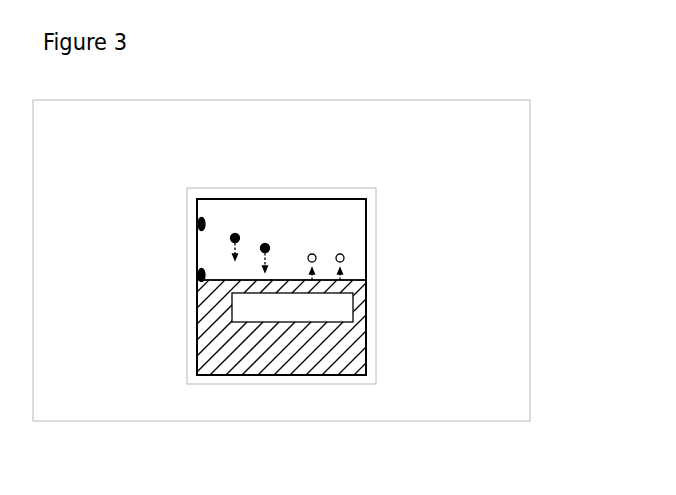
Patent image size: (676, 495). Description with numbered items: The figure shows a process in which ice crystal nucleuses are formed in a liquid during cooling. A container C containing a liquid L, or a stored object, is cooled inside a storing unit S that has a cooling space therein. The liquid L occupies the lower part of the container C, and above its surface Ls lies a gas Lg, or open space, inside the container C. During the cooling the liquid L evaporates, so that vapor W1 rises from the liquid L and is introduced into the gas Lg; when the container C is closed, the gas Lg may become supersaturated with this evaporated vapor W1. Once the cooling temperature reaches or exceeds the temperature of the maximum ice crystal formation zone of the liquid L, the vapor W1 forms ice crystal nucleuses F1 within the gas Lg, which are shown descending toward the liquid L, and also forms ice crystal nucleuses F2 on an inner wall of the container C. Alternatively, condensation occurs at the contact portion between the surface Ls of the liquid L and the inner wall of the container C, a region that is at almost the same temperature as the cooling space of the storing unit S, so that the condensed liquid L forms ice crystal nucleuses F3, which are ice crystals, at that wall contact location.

The storing unit S is at (530, 262).
The container C is at (375, 375).
The liquid L is at (245, 363).
The surface of the liquid Ls is at (355, 276).
The gas Lg is at (295, 223).
The ice crystal nucleuses F1 is at (265, 243).
The ice crystal nucleuses F2 is at (200, 224).
The ice crystal nucleuses F3 is at (200, 275).
The vapor W1 is at (340, 253).